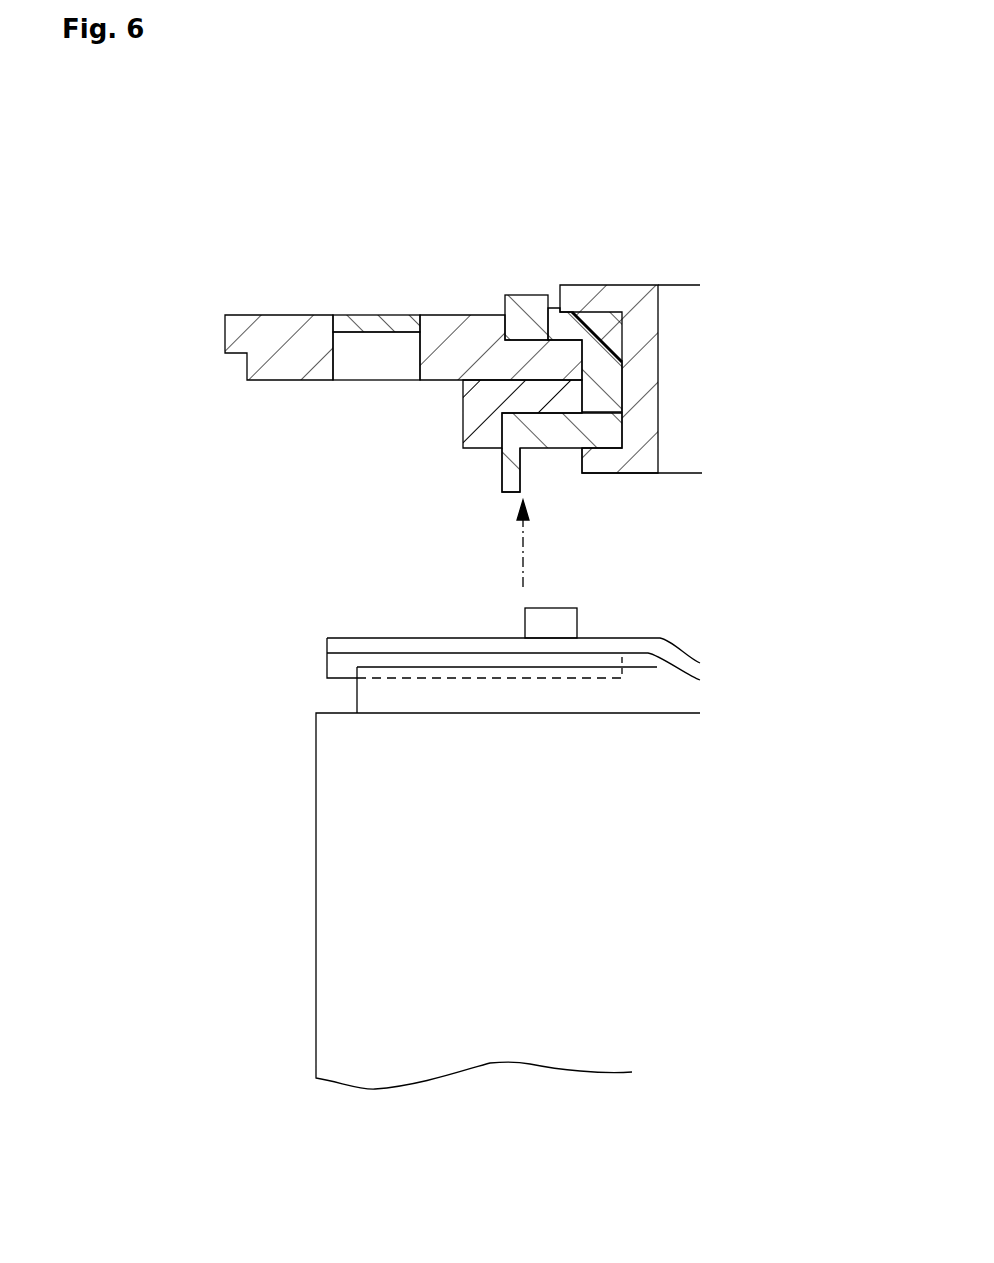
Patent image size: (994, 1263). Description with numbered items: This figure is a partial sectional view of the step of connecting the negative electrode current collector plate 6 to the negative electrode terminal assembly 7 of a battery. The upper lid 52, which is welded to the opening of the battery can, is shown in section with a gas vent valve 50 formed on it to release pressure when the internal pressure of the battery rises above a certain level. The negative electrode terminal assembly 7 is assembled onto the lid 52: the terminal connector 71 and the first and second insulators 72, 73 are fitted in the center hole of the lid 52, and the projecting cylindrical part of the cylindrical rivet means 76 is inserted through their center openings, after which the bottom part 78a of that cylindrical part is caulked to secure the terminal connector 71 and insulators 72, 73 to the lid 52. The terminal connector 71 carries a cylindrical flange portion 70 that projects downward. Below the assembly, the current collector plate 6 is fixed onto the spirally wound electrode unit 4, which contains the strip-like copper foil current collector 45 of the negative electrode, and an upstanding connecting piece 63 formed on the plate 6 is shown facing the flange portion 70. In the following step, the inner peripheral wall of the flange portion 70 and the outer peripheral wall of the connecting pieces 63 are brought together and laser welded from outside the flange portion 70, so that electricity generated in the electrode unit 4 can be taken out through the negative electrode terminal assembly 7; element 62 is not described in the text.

The spirally wound electrode unit 4 is at (558, 857).
The current collector plate 6 is at (393, 636).
The negative electrode terminal assembly 7 is at (570, 347).
The current collector 45 is at (375, 697).
The gas vent valve 50 is at (390, 313).
The upper lid 52 is at (278, 333).
The flange 62 is at (335, 665).
The connecting pieces 63 is at (562, 618).
The flange portion 70 is at (502, 478).
The terminal connector 71 is at (602, 430).
The first insulator 72 is at (465, 424).
The second insulator 73 is at (608, 380).
The rivet means 76 is at (640, 350).
The bottom part 78a is at (604, 458).